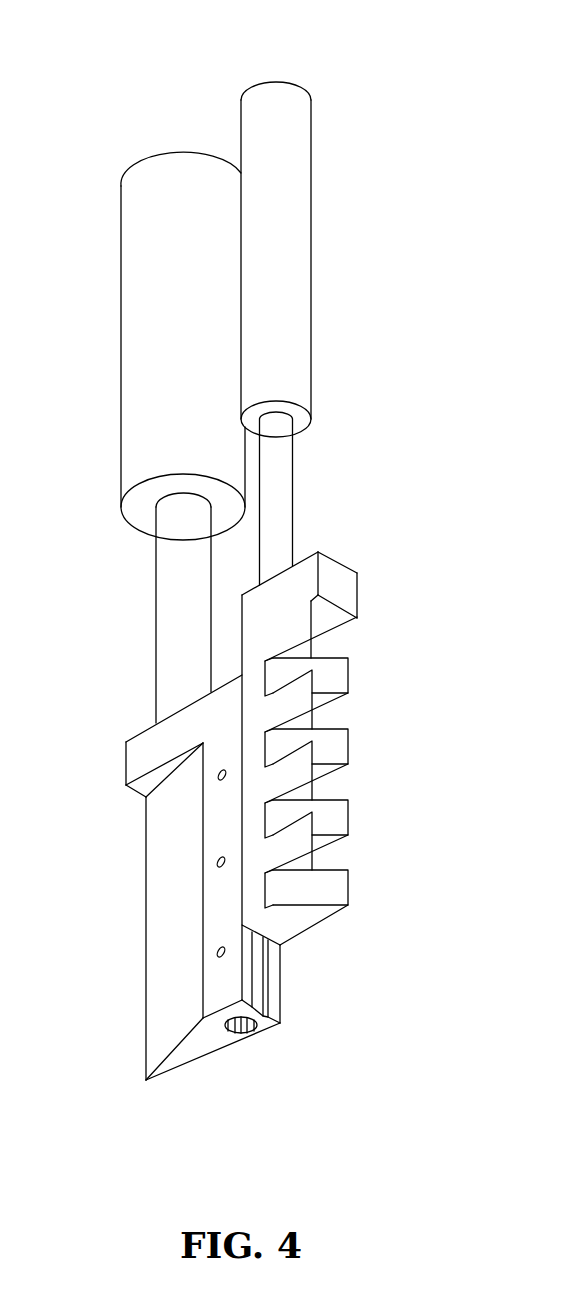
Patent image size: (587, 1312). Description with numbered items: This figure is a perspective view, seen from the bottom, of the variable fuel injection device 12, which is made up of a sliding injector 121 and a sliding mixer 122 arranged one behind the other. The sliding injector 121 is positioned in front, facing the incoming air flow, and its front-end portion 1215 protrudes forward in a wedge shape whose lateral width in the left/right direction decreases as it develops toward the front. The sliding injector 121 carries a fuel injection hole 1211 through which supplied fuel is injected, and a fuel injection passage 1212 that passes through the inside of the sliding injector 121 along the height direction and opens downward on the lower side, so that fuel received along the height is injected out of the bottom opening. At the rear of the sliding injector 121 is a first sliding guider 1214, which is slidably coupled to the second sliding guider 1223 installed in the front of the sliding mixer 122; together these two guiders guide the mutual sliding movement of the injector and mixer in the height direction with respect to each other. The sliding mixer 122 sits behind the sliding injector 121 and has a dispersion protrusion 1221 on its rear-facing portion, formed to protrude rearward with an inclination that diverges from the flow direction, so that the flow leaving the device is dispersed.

The variable fuel injection device 12 is at (362, 49).
The sliding injector 121 is at (171, 894).
The sliding mixer 122 is at (352, 772).
The dispersion protrusion 1221 is at (312, 753).
The fuel injection hole 1211 is at (217, 862).
The front-end portion 1215 is at (150, 927).
The second sliding guider 1223 is at (263, 932).
The first sliding guider 1214 is at (264, 993).
The fuel injection passage 1212 is at (243, 1031).